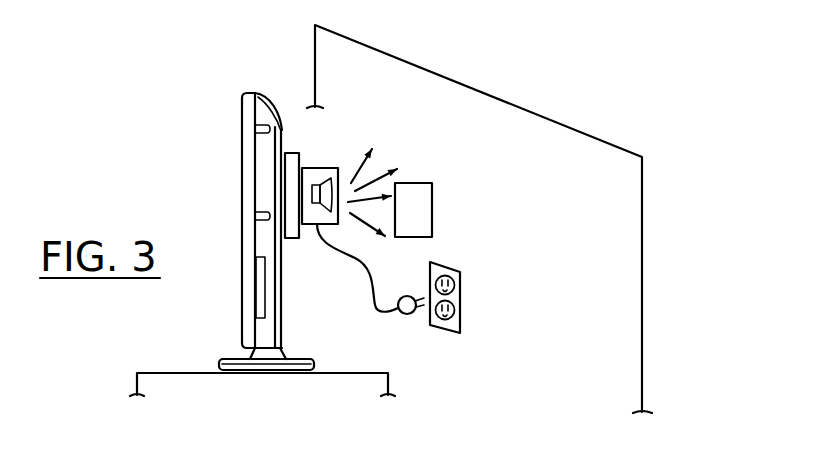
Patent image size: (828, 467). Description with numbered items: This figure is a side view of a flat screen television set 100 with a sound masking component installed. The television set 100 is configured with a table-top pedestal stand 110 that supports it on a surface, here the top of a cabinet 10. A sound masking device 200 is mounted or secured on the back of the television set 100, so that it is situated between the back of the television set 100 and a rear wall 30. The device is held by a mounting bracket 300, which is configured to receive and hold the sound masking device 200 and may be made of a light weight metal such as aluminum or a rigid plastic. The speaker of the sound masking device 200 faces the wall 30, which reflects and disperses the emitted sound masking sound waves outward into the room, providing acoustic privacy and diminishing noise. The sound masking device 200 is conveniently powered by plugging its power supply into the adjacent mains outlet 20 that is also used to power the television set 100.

The cabinet 10 is at (124, 356).
The mains outlet 20 is at (462, 306).
The wall 30 is at (588, 165).
The television set 100 is at (276, 87).
The pedestal stand 110 is at (312, 364).
The sound masking device 200 is at (325, 160).
The mounting bracket 300 is at (285, 240).